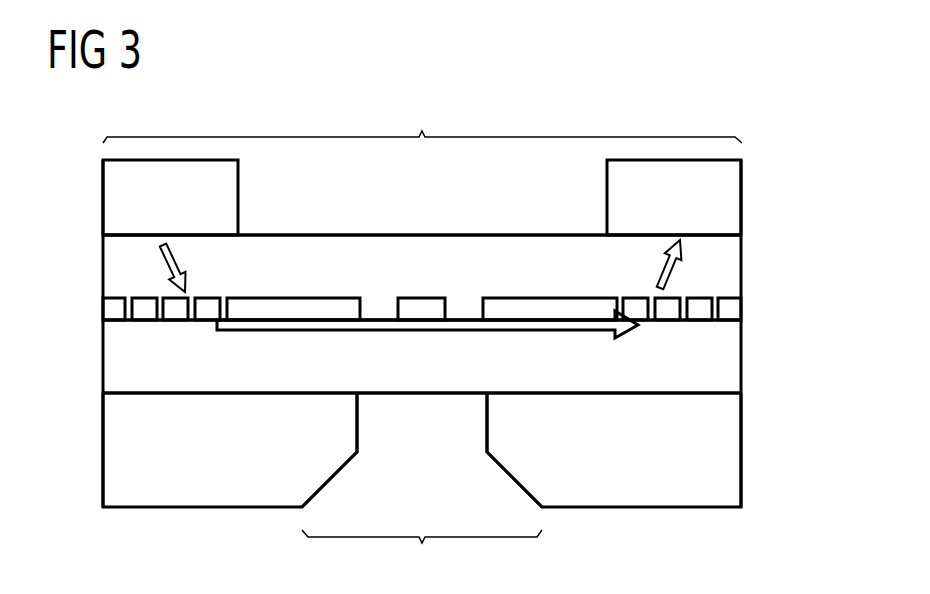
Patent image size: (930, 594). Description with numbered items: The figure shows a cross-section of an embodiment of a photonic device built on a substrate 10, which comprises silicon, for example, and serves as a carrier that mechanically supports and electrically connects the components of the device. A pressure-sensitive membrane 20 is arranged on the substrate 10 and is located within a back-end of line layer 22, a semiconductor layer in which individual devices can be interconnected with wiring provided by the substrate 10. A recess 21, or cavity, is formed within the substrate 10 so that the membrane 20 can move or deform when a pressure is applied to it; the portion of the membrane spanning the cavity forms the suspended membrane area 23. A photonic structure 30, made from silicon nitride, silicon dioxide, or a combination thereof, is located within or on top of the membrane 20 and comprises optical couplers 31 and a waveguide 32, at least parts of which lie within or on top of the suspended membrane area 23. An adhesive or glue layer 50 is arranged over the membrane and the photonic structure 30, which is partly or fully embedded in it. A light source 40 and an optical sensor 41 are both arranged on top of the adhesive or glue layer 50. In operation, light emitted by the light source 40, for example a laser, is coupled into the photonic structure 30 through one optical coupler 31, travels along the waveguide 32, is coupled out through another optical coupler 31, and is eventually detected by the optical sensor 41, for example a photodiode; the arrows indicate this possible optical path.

The substrate 10 is at (118, 453).
The membrane 20 is at (90, 323).
The recess 21 is at (420, 440).
The back-end of line layer 22 is at (728, 362).
The suspended membrane area 23 is at (422, 557).
The photonic structure 30 is at (422, 118).
The optical coupler 31 is at (108, 308).
The waveguide 32 is at (415, 290).
The light source 40 is at (118, 193).
The optical sensor 41 is at (728, 193).
The adhesive or glue layer 50 is at (727, 268).